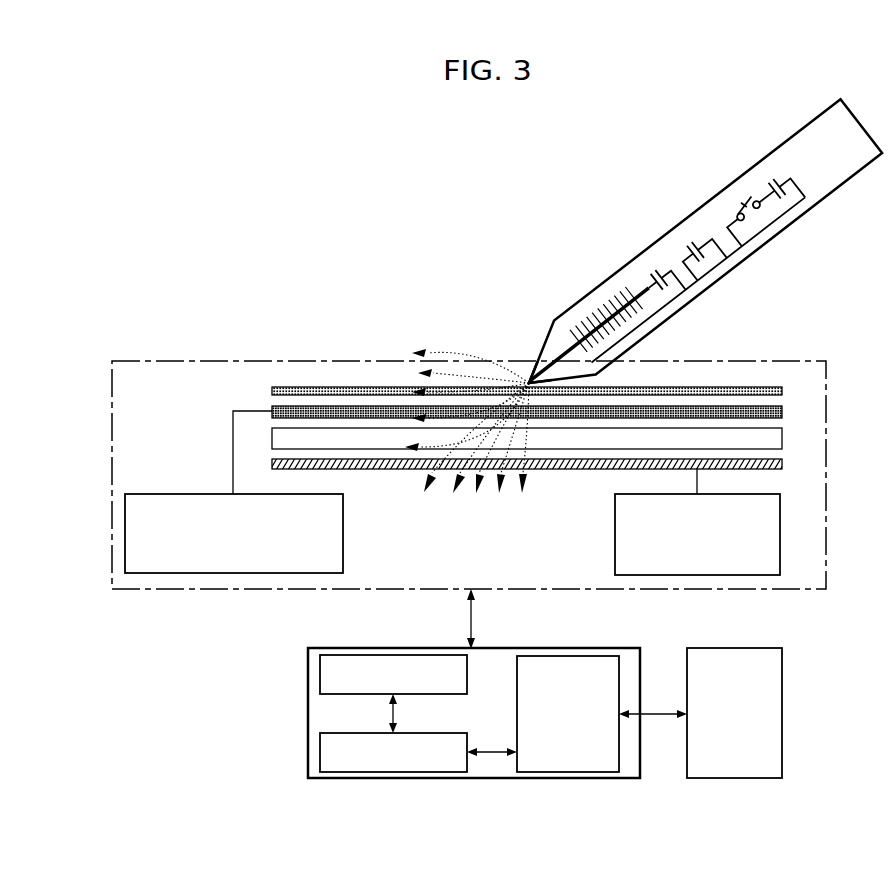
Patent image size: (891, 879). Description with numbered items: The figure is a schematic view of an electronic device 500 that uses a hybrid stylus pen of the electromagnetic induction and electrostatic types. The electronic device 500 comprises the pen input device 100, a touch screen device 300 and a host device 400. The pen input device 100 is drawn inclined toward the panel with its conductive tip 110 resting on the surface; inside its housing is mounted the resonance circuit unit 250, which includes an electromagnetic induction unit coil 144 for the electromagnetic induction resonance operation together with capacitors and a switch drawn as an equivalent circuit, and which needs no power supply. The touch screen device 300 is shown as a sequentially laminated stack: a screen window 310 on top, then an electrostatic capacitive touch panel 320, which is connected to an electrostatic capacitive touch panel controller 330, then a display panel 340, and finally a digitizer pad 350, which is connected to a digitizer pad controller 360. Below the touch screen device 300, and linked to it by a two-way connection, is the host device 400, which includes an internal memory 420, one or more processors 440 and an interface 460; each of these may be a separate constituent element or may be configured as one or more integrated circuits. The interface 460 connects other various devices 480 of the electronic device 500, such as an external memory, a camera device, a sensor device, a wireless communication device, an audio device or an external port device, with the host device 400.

The pen input device 100 is at (773, 152).
The conductive tip 110 is at (528, 381).
The electromagnetic induction unit coil 144 is at (620, 292).
The resonance circuit unit 250 is at (668, 254).
The touch screen device 300 is at (719, 361).
The screen window 310 is at (782, 390).
The electrostatic capacitive touch panel 320 is at (782, 411).
The electrostatic capacitive touch panel controller 330 is at (125, 532).
The display panel 340 is at (782, 437).
The digitizer pad 350 is at (782, 463).
The digitizer pad controller 360 is at (780, 530).
The host device 400 is at (475, 691).
The internal memory 420 is at (320, 676).
The processor 440 is at (320, 754).
The interface 460 is at (619, 667).
The other various devices 480 is at (737, 648).
The electronic device 500 is at (290, 192).